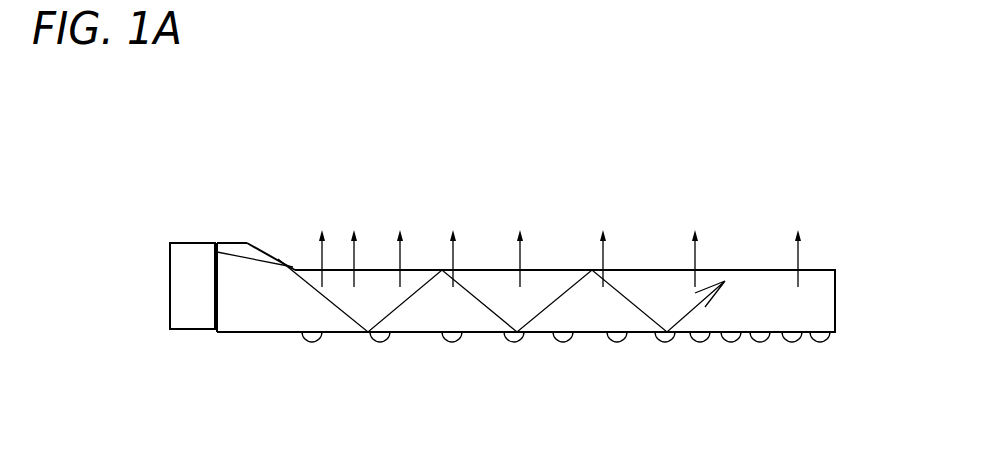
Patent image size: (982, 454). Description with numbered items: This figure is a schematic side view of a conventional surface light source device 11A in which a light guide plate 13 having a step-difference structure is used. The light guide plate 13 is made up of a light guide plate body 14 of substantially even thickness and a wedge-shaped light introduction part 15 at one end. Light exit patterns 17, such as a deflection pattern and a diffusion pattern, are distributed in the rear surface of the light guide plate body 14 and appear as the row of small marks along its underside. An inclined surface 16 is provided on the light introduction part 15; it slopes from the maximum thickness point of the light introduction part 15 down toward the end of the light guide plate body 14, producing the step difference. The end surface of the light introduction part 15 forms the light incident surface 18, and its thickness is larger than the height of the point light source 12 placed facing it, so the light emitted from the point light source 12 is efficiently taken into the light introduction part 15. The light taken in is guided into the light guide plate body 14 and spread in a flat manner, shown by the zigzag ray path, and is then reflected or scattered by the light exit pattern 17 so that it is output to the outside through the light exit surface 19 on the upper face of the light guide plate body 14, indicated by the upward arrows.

The surface light source device 11A is at (737, 143).
The point light source 12 is at (190, 255).
The light guide plate 13 is at (777, 332).
The light guide plate body 14 is at (587, 305).
The light introduction part 15 is at (257, 312).
The inclined surface 16 is at (268, 252).
The light exit patterns 17 is at (388, 337).
The light incident surface 18 is at (216, 305).
The light exit surface 19 is at (557, 270).